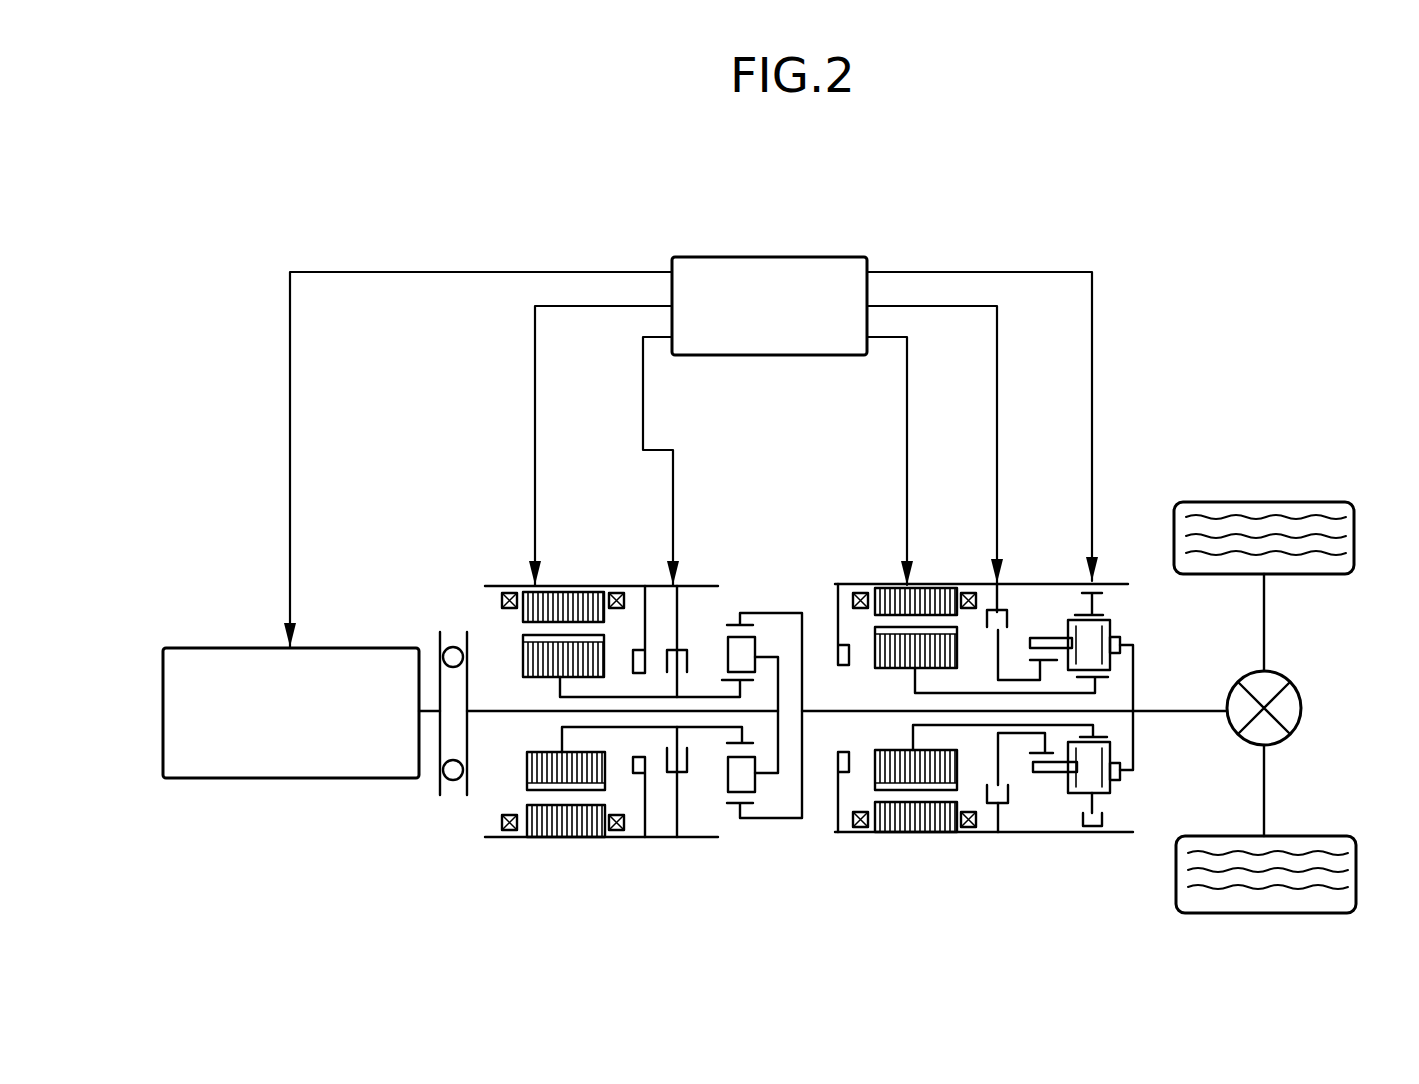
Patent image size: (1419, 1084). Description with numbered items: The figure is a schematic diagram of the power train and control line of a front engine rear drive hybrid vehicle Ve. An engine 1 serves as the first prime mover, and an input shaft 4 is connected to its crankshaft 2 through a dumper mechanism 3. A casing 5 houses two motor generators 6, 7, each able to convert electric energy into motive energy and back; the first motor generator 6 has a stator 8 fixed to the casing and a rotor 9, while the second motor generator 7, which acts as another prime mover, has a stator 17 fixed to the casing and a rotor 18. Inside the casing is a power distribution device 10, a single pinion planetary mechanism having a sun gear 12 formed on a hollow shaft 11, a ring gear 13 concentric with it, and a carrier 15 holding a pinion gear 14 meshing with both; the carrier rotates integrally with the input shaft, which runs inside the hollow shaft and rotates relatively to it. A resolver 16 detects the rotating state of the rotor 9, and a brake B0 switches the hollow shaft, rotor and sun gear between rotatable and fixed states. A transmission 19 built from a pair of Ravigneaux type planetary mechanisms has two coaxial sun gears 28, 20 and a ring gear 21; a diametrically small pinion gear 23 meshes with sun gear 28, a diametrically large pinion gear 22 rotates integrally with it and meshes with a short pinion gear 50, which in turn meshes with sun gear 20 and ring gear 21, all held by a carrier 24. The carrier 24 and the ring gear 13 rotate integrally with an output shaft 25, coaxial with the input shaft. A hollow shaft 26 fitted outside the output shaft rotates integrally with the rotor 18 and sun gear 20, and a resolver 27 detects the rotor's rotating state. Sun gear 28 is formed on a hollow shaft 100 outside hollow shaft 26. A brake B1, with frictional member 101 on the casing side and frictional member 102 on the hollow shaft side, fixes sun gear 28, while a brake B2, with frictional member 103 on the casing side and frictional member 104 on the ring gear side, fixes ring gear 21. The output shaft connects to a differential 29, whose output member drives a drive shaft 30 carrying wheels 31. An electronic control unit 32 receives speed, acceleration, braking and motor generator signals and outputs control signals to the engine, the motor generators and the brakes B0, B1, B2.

The engine 1 is at (234, 648).
The crankshaft 2 is at (436, 720).
The dumper mechanism 3 is at (427, 617).
The input shaft 4 is at (493, 707).
The casing 5 is at (488, 837).
The motor generator 6 is at (542, 677).
The motor generator 7 is at (984, 670).
The stator 8 is at (508, 623).
The rotor 9 is at (527, 763).
The power distribution device 10 is at (777, 694).
The hollow shaft 11 is at (703, 727).
The sun gear 12 is at (724, 682).
The ring gear 13 is at (746, 808).
The pinion gear 14 is at (748, 653).
The carrier 15 is at (778, 745).
The resolver 16 is at (640, 763).
The stator 17 is at (955, 804).
The rotor 18 is at (878, 765).
The transmission 19 is at (1131, 623).
The sun gear 20 is at (1134, 745).
The ring gear 21 is at (1106, 799).
The diametrically large pinion gear 22 is at (1120, 782).
The diametrically small pinion gear 23 is at (1040, 775).
The carrier 24 is at (1134, 654).
The output shaft 25 is at (836, 711).
The hollow shaft 26 is at (948, 694).
The resolver 27 is at (837, 640).
The sun gear 28 is at (1021, 666).
The differential 29 is at (1307, 700).
The drive shaft 30 is at (1264, 608).
The wheels 31 is at (1234, 512).
The electronic control unit 32 is at (752, 257).
The short pinion gear 50 is at (1107, 620).
The hollow shaft 100 is at (1010, 805).
The frictional member 101 is at (987, 805).
The frictional member 102 is at (988, 608).
The frictional member 103 is at (1072, 584).
The frictional member 104 is at (1104, 828).
The brake B0 is at (691, 638).
The brake B1 is at (1011, 601).
The brake B2 is at (1085, 835).
The vehicle Ve is at (409, 871).